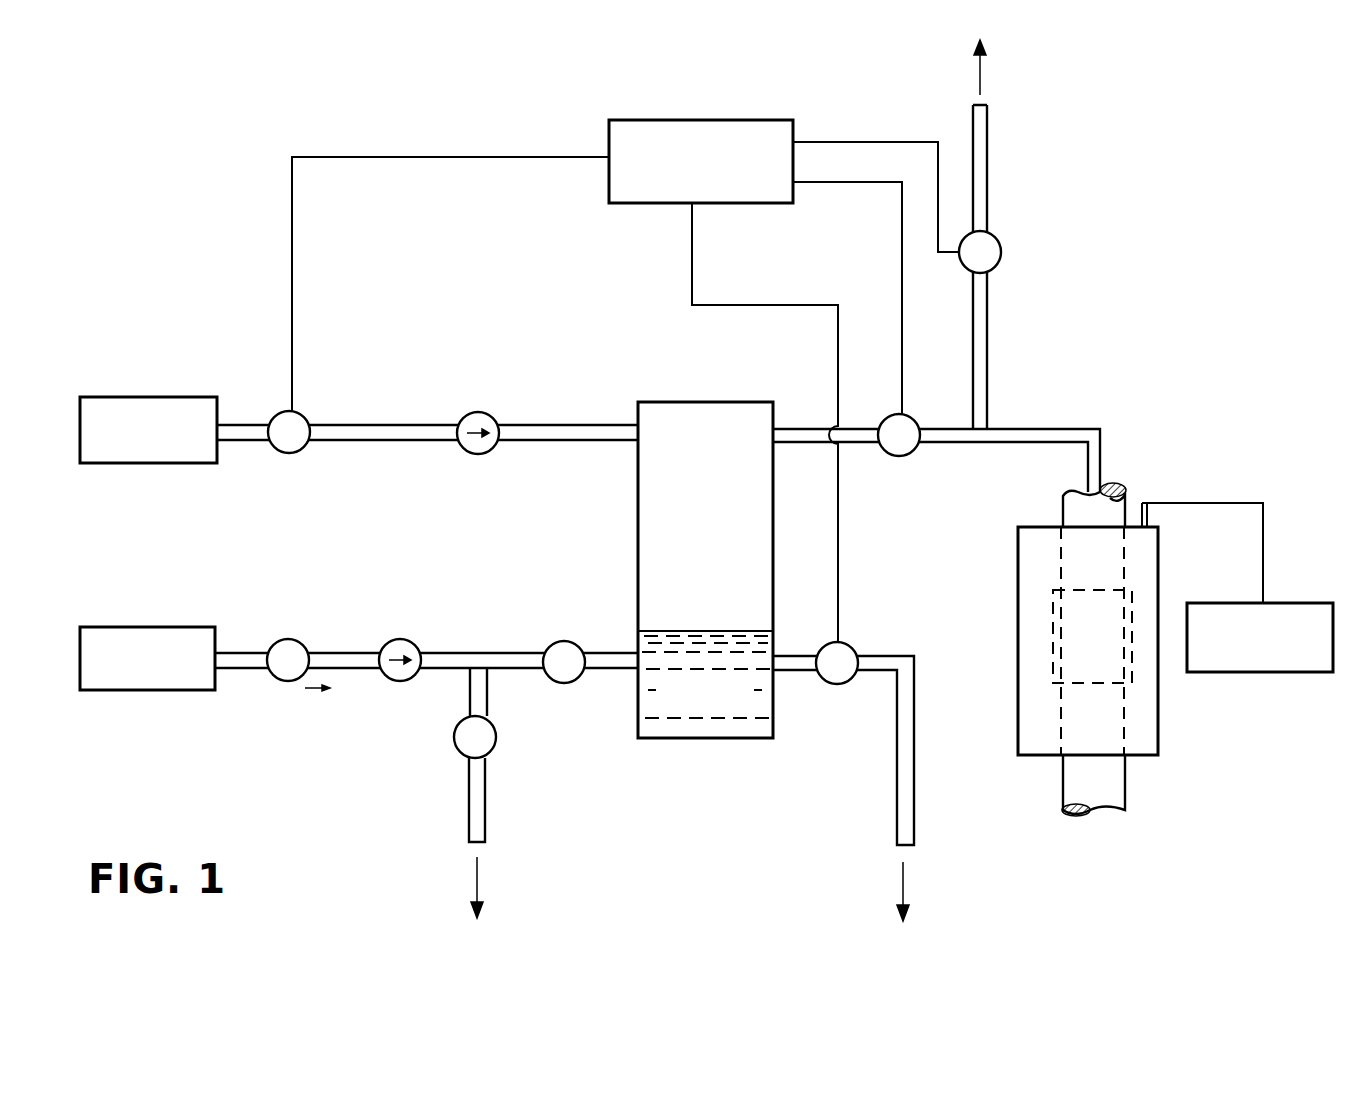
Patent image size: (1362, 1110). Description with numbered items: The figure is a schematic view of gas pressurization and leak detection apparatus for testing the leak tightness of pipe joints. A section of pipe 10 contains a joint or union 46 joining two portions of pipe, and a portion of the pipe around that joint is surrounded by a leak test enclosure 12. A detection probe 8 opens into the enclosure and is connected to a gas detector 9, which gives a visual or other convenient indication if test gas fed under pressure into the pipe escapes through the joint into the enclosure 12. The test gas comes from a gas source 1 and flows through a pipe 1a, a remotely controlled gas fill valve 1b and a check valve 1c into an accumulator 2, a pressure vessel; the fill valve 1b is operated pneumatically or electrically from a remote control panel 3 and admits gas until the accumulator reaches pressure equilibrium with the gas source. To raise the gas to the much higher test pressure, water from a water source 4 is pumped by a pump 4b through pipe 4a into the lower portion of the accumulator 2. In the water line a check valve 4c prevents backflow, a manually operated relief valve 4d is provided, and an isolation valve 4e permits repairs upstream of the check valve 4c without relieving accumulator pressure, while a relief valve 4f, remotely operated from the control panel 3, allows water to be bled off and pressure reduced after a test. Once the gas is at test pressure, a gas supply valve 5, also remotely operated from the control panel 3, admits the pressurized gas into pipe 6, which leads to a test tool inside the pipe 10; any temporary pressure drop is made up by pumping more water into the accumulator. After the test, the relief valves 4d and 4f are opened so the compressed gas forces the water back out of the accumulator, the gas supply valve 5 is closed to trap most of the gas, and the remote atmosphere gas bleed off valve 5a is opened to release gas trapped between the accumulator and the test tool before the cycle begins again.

The gas source 1 is at (186, 463).
The pipe 1a is at (234, 418).
The gas fill valve 1b is at (291, 453).
The check valve 1c is at (490, 413).
The accumulator 2 is at (638, 532).
The remote control panel 3 is at (742, 120).
The water source 4 is at (174, 690).
The pipe 4a is at (250, 653).
The pump 4b is at (287, 677).
The check valve 4c is at (417, 645).
The relief valve 4d is at (496, 741).
The isolation valve 4e is at (567, 641).
The relief valve 4f is at (852, 648).
The gas supply valve 5 is at (912, 452).
The atmosphere gas bleed off valve 5a is at (1001, 247).
The pipe 6 is at (1038, 428).
The detection probe 8 is at (1150, 510).
The gas detector 9 is at (1288, 672).
The pipe 10 is at (1118, 792).
The leak test enclosure 12 is at (1025, 557).
The joint 46 is at (1050, 628).